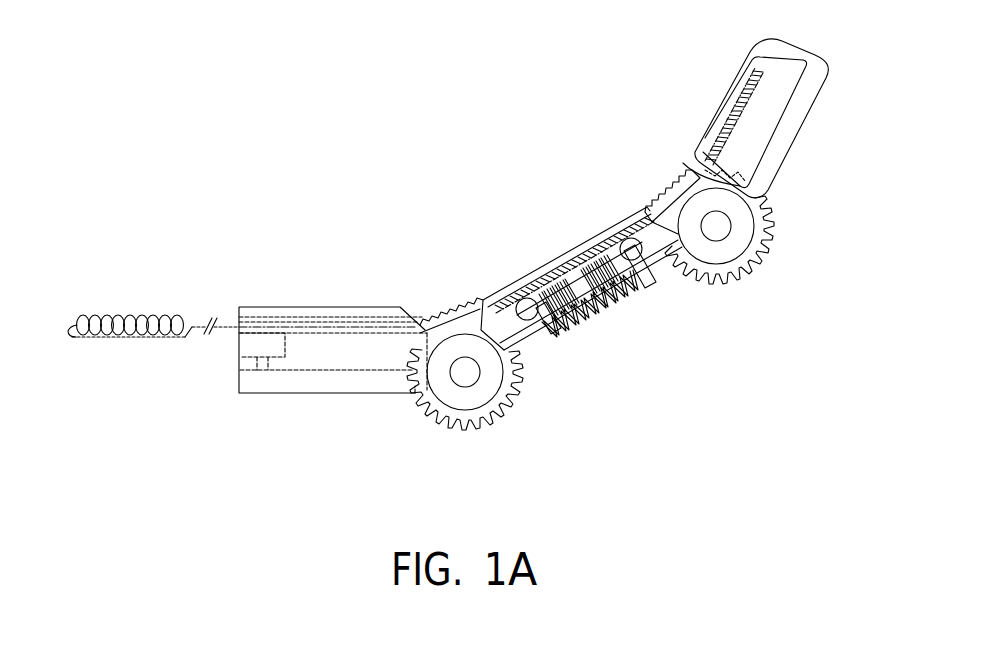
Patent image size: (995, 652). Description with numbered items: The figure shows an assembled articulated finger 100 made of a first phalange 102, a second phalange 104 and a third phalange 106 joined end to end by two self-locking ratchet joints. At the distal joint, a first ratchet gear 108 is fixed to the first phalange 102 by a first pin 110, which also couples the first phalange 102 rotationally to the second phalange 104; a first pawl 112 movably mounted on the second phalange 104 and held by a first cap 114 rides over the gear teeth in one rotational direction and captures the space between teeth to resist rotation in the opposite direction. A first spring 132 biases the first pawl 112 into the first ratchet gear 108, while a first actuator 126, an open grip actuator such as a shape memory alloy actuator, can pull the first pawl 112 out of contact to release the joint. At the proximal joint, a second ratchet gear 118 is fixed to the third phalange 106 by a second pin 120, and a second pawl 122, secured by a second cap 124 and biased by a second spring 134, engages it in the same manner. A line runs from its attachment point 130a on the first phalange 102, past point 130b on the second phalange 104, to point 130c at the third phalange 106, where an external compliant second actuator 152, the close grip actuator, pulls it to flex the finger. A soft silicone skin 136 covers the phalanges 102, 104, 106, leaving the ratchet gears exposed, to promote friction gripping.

The articulated finger 100 is at (47, 316).
The first phalange 102 is at (757, 108).
The second phalange 104 is at (565, 243).
The third phalange 106 is at (322, 345).
The first ratchet gear 108 is at (760, 267).
The first pin 110 is at (716, 226).
The first pawl 112 is at (667, 275).
The first cap 114 is at (636, 272).
The second ratchet gear 118 is at (497, 417).
The second pin 120 is at (465, 372).
The second pawl 122 is at (514, 335).
The second cap 124 is at (527, 308).
The first actuator 126 is at (604, 318).
The point of the line at the first phalange 130a is at (677, 173).
The point of the line at the second phalange 130b is at (443, 310).
The point of the line at the third phalange 130c is at (227, 317).
The first spring 132 is at (609, 310).
The second spring 134 is at (547, 280).
The skin 136 is at (305, 387).
The second actuator 152 is at (107, 320).